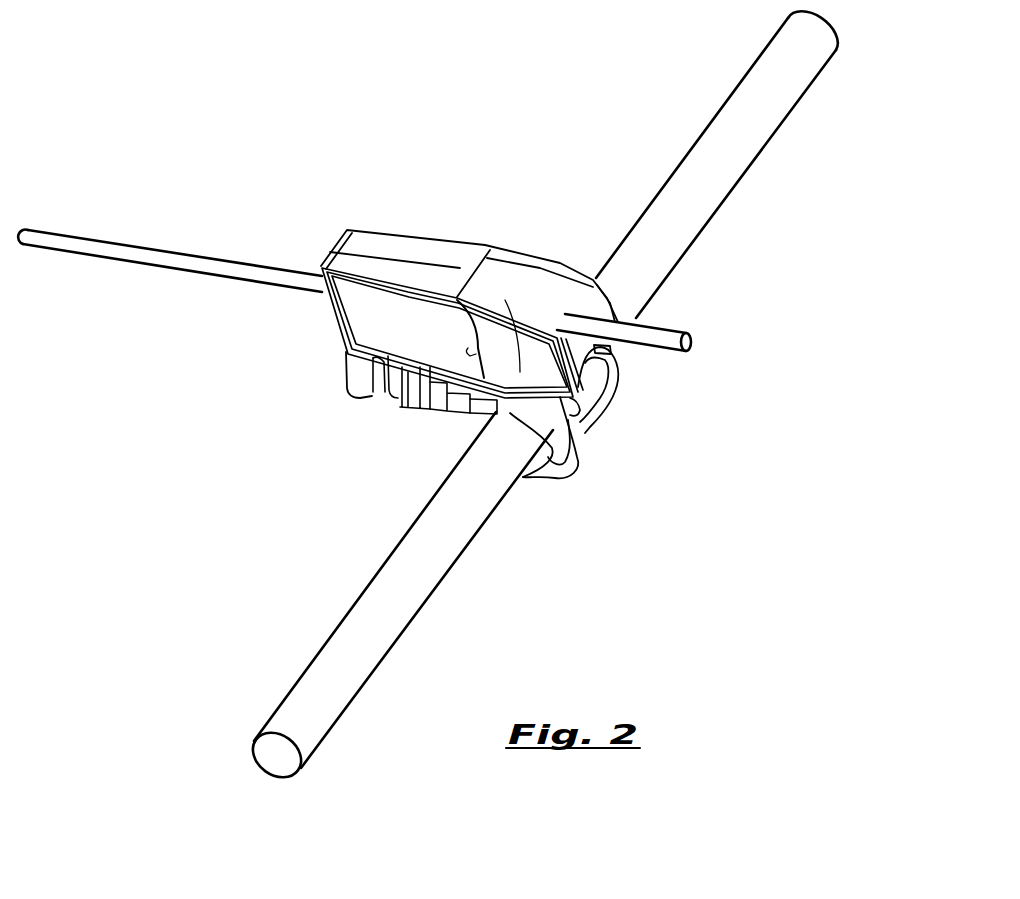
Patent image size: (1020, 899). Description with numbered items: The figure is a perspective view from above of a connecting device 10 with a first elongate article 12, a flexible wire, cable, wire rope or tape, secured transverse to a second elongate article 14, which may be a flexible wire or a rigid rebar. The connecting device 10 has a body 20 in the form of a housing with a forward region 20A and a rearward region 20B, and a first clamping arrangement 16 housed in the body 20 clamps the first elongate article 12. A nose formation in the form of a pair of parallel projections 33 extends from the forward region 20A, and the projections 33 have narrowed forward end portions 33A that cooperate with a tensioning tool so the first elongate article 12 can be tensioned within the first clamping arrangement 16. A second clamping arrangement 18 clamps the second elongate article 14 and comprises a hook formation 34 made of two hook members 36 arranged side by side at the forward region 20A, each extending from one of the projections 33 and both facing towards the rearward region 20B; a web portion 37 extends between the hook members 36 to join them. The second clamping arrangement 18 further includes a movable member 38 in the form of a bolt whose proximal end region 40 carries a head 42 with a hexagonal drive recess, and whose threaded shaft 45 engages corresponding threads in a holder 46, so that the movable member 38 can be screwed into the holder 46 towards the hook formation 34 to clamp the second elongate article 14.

The connecting device 10 is at (384, 197).
The first elongate article 12 is at (127, 255).
The second elongate article 14 is at (755, 123).
The first clamping arrangement 16 is at (489, 274).
The second clamping arrangement 18 is at (417, 416).
The body 20 is at (450, 252).
The forward region 20A is at (474, 250).
The rearward region 20B is at (340, 231).
The projections 33 is at (565, 262).
The narrowed forward end portions 33A is at (618, 296).
The hook formation 34 is at (583, 463).
The hook members 36 is at (622, 390).
The web portion 37 is at (592, 417).
The movable member 38 is at (348, 384).
The proximal end region 40 is at (341, 345).
The head 42 is at (357, 362).
The threaded shaft 45 is at (380, 398).
The holder 46 is at (446, 410).